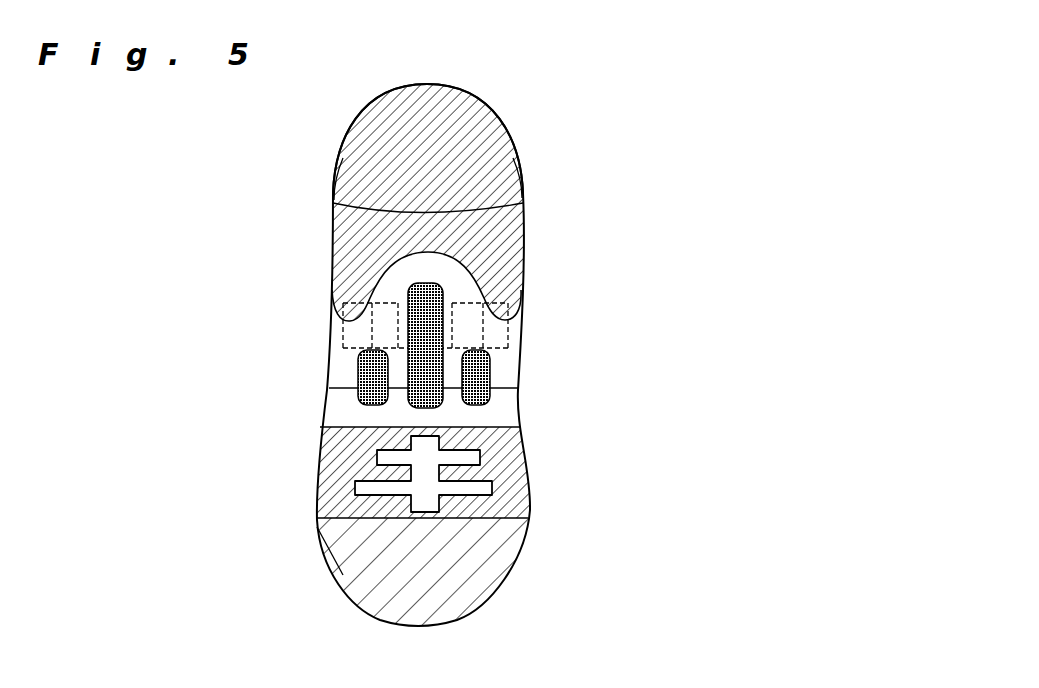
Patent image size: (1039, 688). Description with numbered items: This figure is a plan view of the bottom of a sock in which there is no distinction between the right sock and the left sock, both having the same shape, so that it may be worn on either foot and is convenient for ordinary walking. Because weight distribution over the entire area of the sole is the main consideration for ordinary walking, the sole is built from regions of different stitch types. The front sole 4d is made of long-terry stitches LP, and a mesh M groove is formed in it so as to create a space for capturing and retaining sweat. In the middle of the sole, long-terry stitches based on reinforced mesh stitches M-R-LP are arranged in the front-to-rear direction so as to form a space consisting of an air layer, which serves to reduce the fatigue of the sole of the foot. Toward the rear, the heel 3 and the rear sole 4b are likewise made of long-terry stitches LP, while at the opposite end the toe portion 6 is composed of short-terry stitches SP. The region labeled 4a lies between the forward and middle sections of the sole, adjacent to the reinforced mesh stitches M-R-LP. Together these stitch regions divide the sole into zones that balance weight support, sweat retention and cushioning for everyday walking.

The heel 3 is at (435, 135).
The long-terry stitches LP is at (497, 126).
The rear sole 4b is at (487, 228).
The arch sole portion 4a is at (466, 328).
The mesh M is at (338, 403).
The reinforced mesh stitches M-R-LP is at (474, 394).
The front sole 4d is at (481, 506).
The short-terry stitches SP is at (352, 553).
The toe portion 6 is at (402, 590).